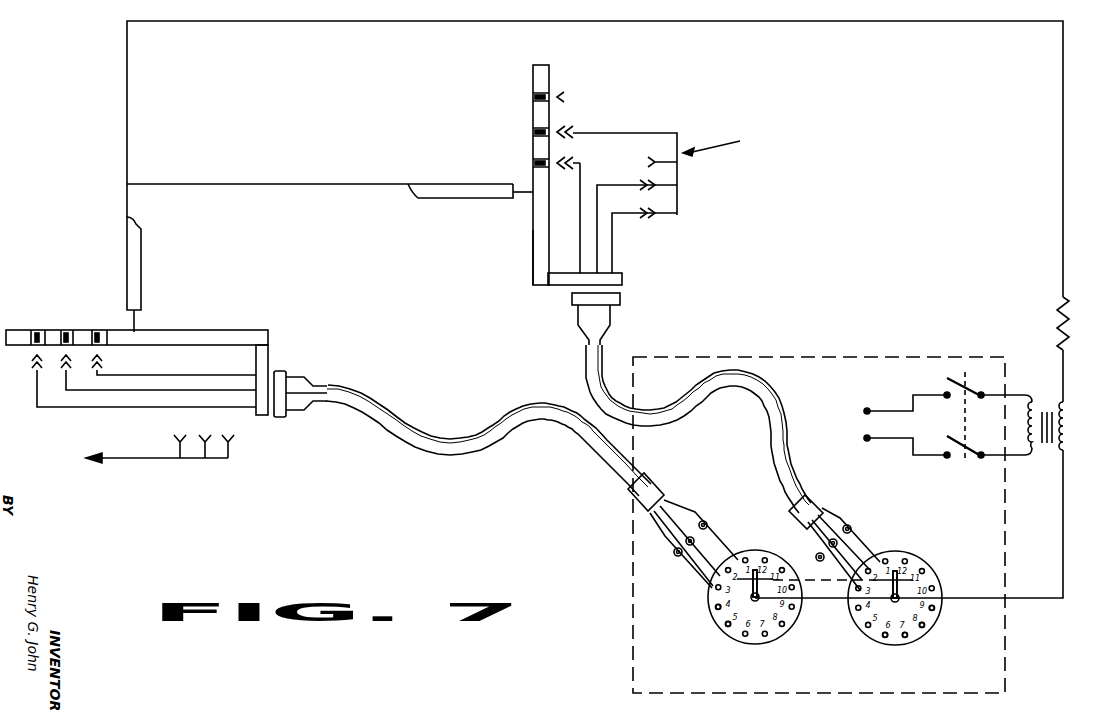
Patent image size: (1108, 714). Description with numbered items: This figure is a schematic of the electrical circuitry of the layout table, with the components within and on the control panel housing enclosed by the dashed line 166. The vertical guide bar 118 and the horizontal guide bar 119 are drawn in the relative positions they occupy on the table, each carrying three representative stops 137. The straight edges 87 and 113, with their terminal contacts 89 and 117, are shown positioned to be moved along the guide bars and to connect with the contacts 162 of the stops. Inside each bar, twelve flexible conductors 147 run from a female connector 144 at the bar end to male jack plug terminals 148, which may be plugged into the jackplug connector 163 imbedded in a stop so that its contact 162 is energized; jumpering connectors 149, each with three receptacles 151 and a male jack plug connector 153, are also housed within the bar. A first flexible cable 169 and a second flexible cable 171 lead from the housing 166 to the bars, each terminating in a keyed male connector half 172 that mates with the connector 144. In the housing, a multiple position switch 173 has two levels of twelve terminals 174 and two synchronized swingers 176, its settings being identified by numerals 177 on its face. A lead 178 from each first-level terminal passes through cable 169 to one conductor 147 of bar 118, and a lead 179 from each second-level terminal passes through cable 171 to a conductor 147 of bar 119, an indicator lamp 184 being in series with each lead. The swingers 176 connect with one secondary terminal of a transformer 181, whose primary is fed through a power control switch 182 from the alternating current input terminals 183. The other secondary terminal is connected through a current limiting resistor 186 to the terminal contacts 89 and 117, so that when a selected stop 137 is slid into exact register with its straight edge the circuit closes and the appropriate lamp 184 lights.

The straight edge 87 is at (437, 199).
The terminal contact 89 is at (527, 195).
The straight edge 113 is at (142, 252).
The terminal contact 117 is at (138, 322).
The vertical guide bar 118 is at (532, 262).
The horizontal guide bar 119 is at (228, 330).
The stop 137 is at (546, 96).
The multiple conductor electrical connector 144 is at (623, 280).
The flexible conductors 147 is at (582, 177).
The male jack plug terminal 148 is at (579, 164).
The electrical jumpering connector 149 is at (188, 466).
The female jack plug receptacle 151 is at (665, 213).
The male jack plug connector 153 is at (641, 133).
The contact 162 is at (548, 132).
The jackplug connector 163 is at (558, 97).
The electrical component housing 166 is at (1006, 646).
The first flexible multi-conductor cable 169 is at (769, 445).
The second flexible multi-conductor cable 171 is at (396, 401).
The twelve pin male connector half 172 is at (622, 300).
The multiple position switch 173 is at (866, 647).
The terminals 174 is at (723, 627).
The swinger 176 is at (750, 600).
The numerals 177 is at (906, 639).
The lead 178 is at (862, 543).
The lead 179 is at (700, 572).
The transformer 181 is at (1073, 435).
The power control switch 182 is at (957, 378).
The input terminals 183 is at (867, 410).
The indicator lamp 184 is at (673, 552).
The current limiting resistor 186 is at (1060, 305).